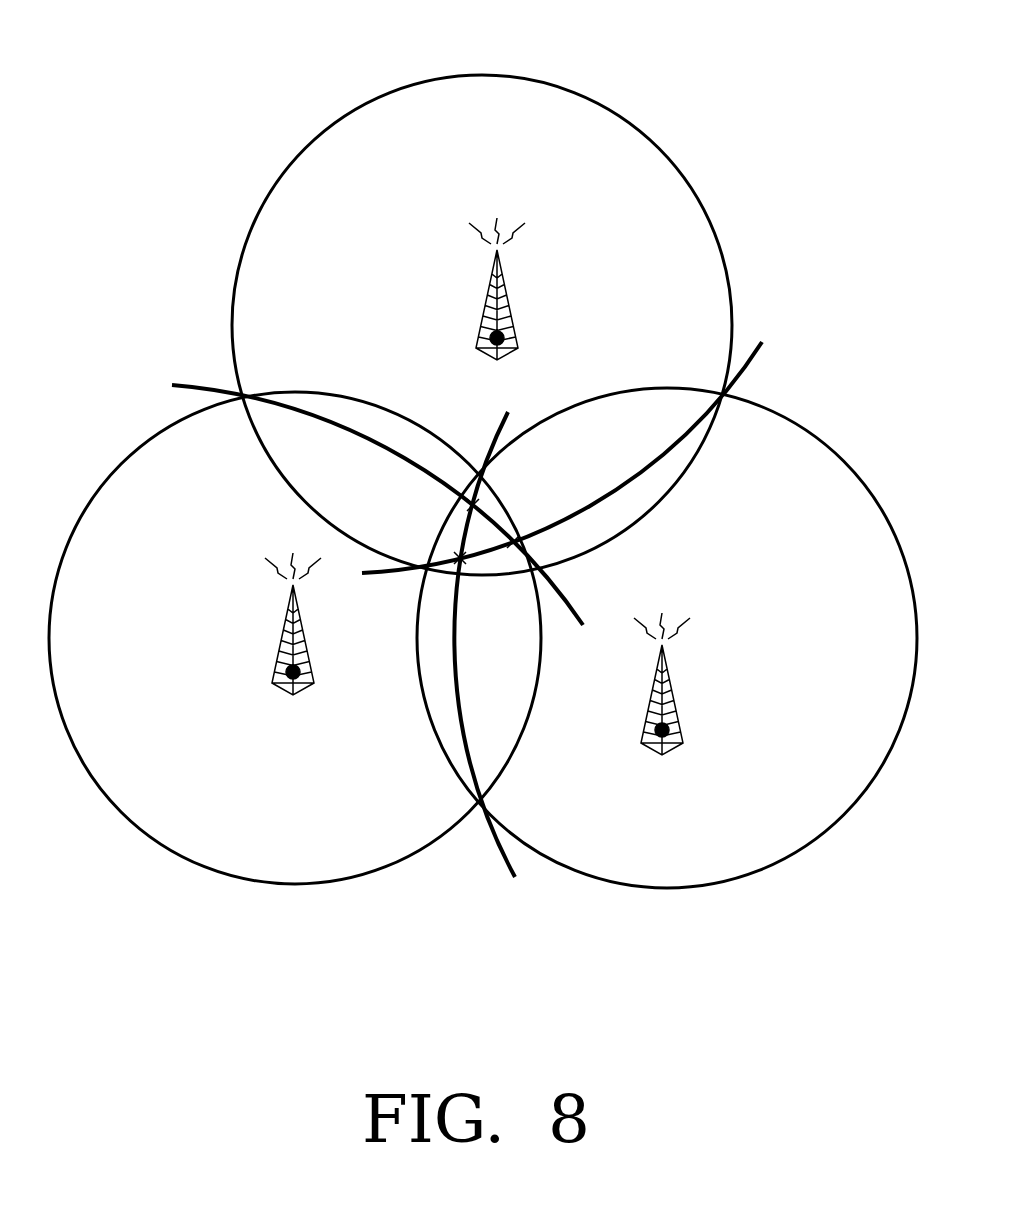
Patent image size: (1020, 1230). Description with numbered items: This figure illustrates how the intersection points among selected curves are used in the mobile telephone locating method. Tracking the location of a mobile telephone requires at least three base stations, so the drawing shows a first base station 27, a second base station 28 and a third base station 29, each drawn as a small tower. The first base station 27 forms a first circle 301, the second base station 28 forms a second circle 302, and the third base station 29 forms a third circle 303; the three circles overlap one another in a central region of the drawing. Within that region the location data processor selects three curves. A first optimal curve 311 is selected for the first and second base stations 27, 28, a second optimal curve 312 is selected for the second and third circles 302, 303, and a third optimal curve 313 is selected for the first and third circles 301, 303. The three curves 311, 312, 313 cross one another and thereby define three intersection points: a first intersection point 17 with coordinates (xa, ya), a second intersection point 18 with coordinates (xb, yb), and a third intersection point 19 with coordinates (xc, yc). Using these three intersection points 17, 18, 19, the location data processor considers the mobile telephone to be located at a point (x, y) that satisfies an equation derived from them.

The first intersection point 17 is at (472, 495).
The second intersection point 18 is at (455, 555).
The third intersection point 19 is at (515, 537).
The first base station 27 is at (315, 668).
The second base station 28 is at (520, 332).
The third base station 29 is at (685, 728).
The first circle 301 is at (123, 460).
The second circle 302 is at (538, 80).
The third circle 303 is at (765, 870).
The first optimal curve 311 is at (192, 383).
The second optimal curve 312 is at (760, 355).
The third optimal curve 313 is at (457, 660).